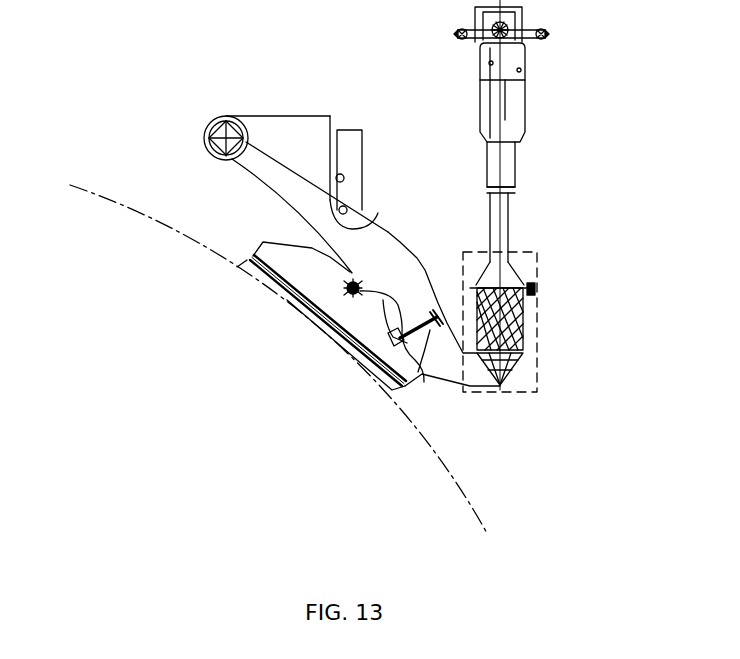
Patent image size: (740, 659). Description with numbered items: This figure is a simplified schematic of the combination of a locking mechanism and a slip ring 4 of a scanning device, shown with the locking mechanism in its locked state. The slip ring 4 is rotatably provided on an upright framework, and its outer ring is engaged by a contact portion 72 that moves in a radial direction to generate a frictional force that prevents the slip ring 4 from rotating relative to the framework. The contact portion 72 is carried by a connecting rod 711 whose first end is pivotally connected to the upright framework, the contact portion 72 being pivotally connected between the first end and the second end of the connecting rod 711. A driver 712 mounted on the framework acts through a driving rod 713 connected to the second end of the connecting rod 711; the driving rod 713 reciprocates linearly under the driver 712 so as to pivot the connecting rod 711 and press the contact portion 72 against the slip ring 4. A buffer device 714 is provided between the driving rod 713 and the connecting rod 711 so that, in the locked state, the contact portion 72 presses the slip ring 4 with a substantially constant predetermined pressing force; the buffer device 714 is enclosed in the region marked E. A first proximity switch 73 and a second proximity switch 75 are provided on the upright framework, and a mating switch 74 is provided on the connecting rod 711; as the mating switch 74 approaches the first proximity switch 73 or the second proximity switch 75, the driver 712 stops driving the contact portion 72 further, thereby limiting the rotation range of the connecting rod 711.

The slip ring 4 is at (165, 232).
The connecting rod 711 is at (267, 157).
The first proximity switch 73 is at (339, 176).
The mating switch 74 is at (364, 221).
The second proximity switch 75 is at (344, 206).
The contact portion 72 is at (313, 278).
The driver 712 is at (518, 112).
The driving rod 713 is at (505, 212).
The buffer device 714 is at (518, 337).
The region E is at (535, 285).